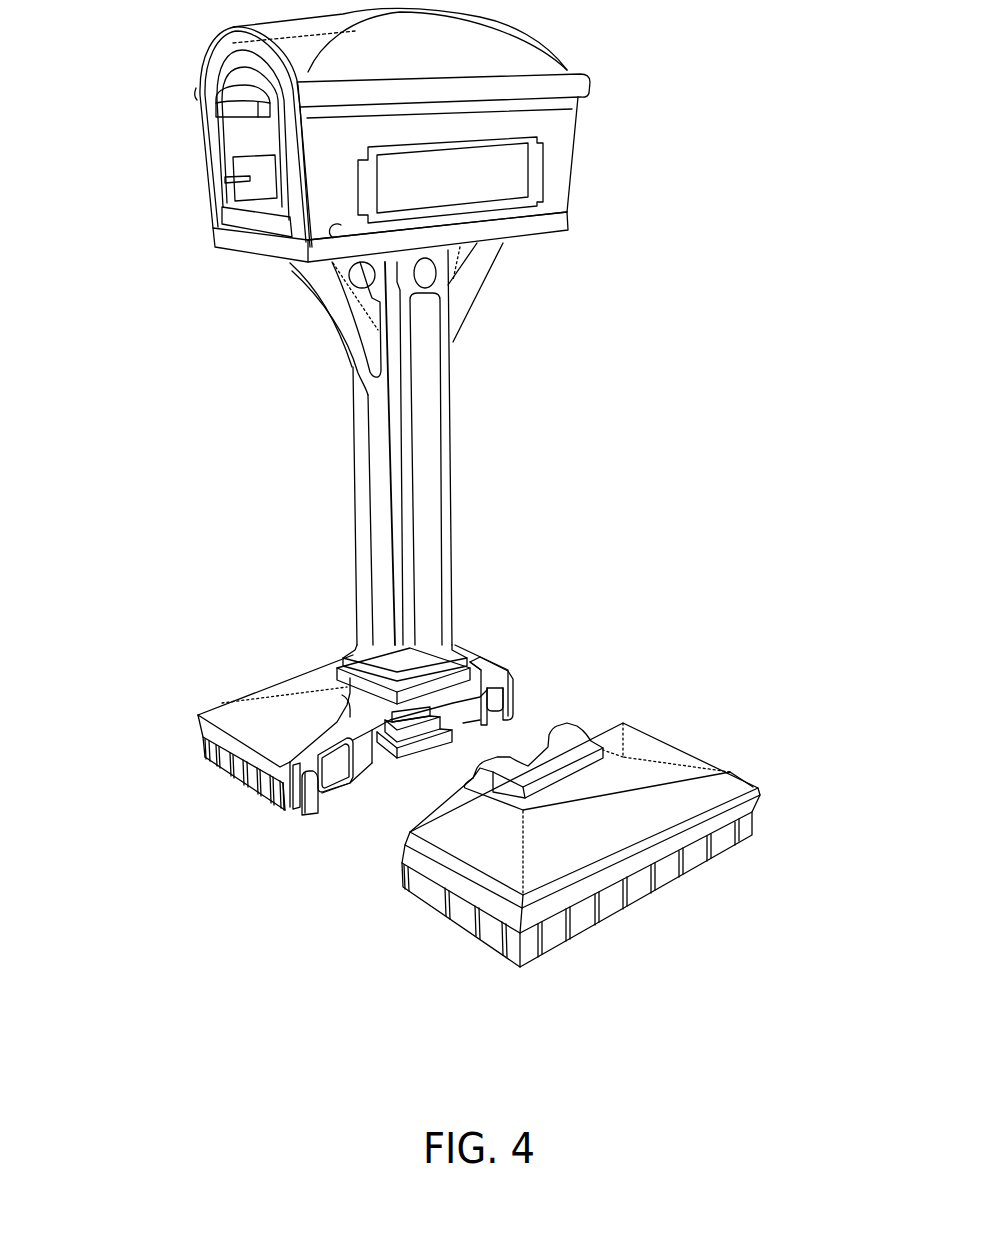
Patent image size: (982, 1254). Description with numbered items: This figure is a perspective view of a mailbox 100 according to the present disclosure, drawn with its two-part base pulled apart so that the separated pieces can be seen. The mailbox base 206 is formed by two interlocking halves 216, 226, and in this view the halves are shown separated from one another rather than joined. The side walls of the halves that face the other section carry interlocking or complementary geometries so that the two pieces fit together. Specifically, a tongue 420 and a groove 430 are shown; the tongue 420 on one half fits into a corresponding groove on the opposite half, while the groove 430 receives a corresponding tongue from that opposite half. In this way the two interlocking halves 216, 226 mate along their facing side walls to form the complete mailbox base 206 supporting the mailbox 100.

The mailbox 100 is at (722, 250).
The mailbox base 206 is at (337, 723).
The interlocking half 216 is at (200, 708).
The interlocking half 226 is at (577, 733).
The tongue 420 is at (320, 807).
The groove 430 is at (507, 692).